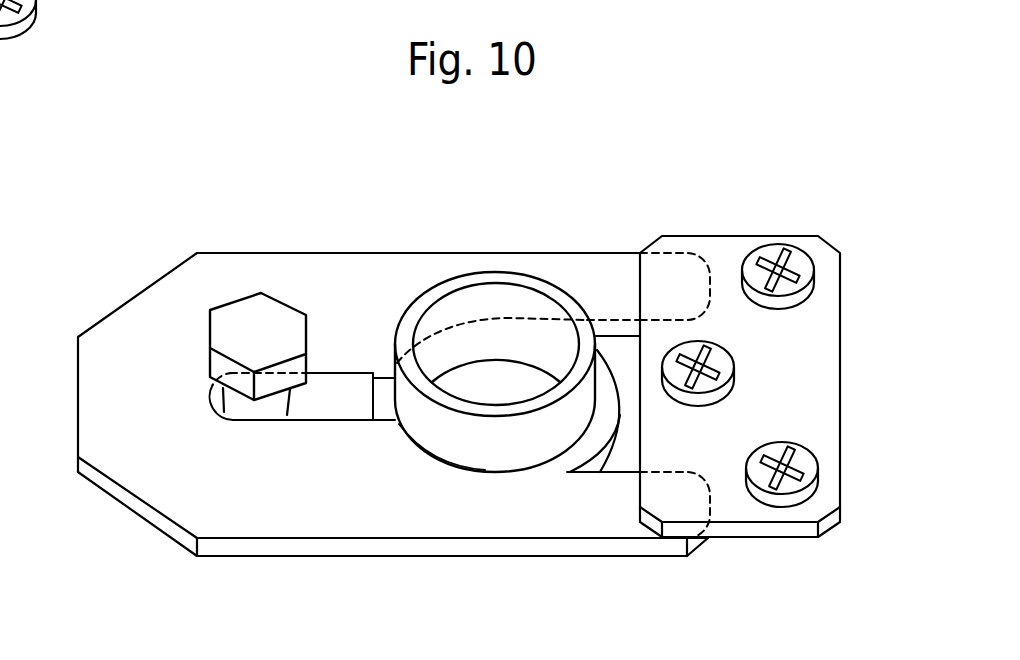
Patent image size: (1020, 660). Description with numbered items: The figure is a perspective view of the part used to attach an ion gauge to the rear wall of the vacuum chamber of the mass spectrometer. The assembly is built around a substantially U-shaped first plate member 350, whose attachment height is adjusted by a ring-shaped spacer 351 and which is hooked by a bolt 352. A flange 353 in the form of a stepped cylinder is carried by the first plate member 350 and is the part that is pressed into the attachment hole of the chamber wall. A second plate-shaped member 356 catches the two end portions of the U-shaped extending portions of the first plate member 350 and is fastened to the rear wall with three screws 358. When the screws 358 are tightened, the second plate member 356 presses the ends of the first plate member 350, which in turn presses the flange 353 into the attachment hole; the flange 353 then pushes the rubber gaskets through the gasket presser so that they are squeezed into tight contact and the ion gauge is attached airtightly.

The first plate member 350 is at (236, 258).
The ring-shaped spacer 351 is at (308, 403).
The bolt 352 is at (210, 325).
The flange 353 is at (450, 283).
The second plate member 356 is at (675, 237).
The screws 358 is at (727, 367).